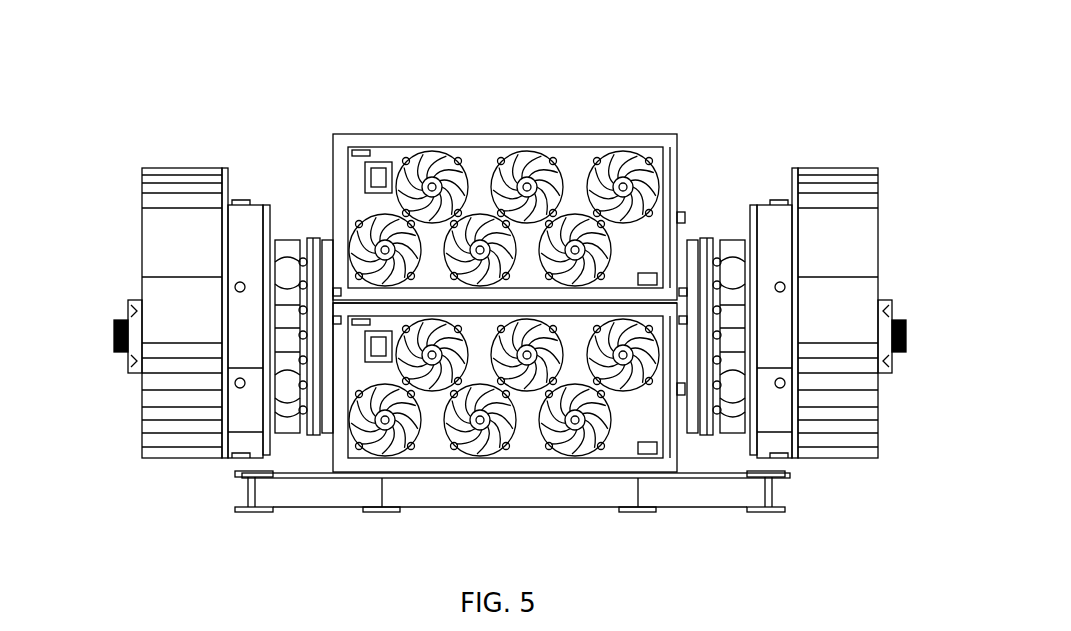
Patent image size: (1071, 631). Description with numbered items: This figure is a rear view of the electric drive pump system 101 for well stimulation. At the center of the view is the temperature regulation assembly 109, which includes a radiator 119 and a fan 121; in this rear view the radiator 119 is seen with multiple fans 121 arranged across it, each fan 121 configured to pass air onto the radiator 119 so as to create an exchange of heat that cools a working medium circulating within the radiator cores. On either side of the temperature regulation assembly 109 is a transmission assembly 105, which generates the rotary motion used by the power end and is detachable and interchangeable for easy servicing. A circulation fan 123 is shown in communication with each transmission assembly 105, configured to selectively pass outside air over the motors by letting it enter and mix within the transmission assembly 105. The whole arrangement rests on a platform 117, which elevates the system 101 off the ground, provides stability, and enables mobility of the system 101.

The electric drive pump system 101 is at (241, 100).
The transmission assembly 105 is at (118, 234).
The temperature regulation assembly 109 is at (542, 262).
The platform 117 is at (240, 480).
The radiator 119 is at (648, 237).
The fan 121 is at (430, 155).
The circulation fan 123 is at (120, 347).